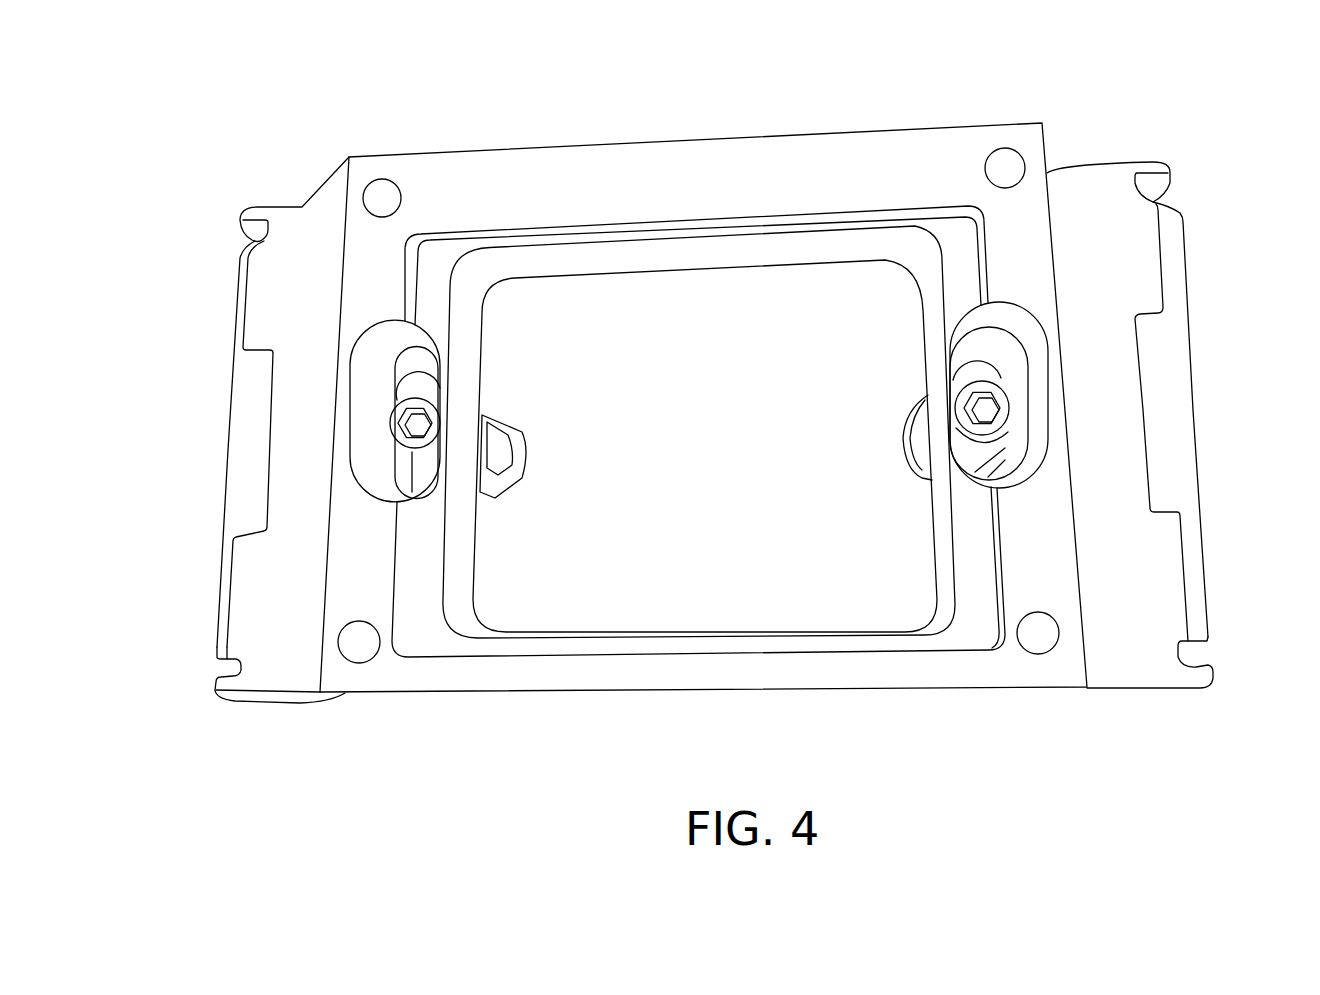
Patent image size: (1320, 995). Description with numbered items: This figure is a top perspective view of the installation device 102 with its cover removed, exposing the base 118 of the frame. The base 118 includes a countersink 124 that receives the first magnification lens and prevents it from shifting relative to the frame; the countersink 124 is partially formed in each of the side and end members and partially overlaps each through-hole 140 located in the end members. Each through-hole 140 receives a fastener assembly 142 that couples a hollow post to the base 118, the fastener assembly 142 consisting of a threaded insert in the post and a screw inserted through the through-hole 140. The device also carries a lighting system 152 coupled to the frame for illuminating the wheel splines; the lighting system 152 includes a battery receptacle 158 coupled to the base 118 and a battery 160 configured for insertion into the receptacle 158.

The installation device 102 is at (281, 114).
The base 118 is at (353, 557).
The countersink 124 is at (962, 259).
The through-hole 140 is at (365, 347).
The fastener assembly 142 is at (392, 423).
The lighting system 152 is at (1185, 425).
The battery receptacle 158 is at (262, 623).
The battery 160 is at (229, 478).